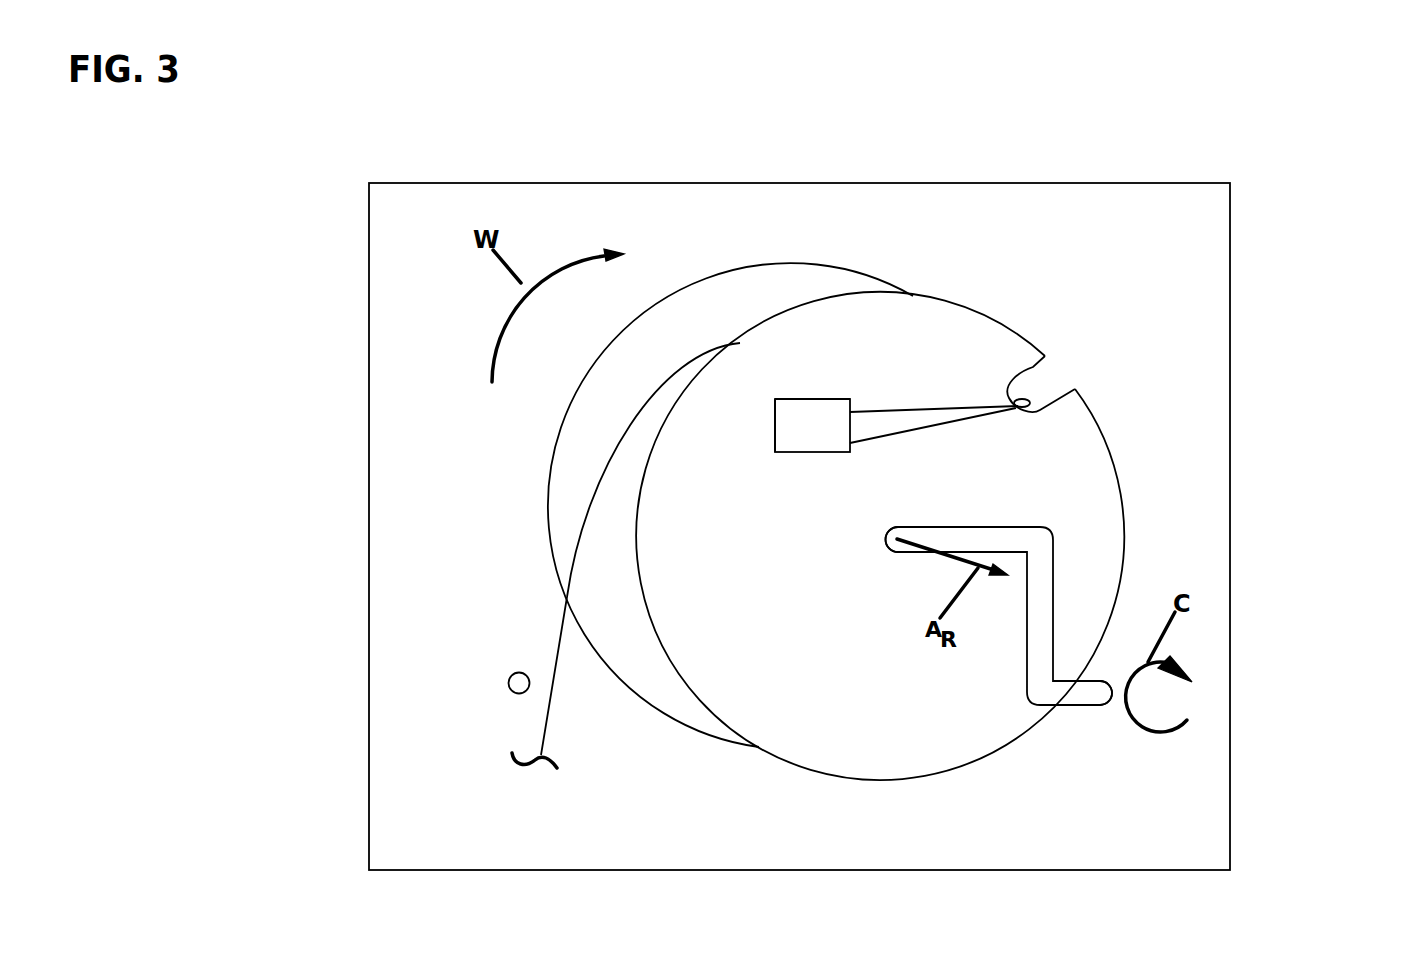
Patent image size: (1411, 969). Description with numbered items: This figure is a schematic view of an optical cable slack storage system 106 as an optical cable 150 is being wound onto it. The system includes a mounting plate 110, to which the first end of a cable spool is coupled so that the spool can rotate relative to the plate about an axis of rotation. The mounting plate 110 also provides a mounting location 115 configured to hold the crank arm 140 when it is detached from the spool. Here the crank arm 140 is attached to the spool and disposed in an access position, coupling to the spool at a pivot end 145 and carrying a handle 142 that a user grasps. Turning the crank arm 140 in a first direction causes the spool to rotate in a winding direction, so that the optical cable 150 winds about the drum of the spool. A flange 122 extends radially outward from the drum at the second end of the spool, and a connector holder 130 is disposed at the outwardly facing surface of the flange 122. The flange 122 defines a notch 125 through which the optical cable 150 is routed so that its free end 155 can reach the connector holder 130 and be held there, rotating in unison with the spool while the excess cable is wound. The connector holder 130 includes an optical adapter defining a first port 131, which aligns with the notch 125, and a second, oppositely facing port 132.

The optical cable slack storage system 106 is at (1242, 404).
The mounting plate 110 is at (1185, 239).
The mounting location 115 is at (511, 675).
The flange 122 is at (815, 735).
The notch 125 is at (1035, 367).
The connector holder 130 is at (792, 453).
The first port 131 is at (852, 399).
The second port 132 is at (775, 412).
The crank arm 140 is at (992, 527).
The handle 142 is at (1098, 693).
The pivot end 145 is at (882, 541).
The optical cable 150 is at (545, 718).
The free end 155 is at (868, 423).